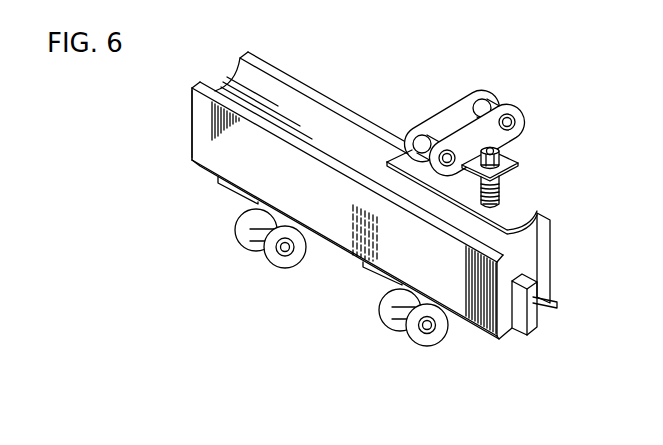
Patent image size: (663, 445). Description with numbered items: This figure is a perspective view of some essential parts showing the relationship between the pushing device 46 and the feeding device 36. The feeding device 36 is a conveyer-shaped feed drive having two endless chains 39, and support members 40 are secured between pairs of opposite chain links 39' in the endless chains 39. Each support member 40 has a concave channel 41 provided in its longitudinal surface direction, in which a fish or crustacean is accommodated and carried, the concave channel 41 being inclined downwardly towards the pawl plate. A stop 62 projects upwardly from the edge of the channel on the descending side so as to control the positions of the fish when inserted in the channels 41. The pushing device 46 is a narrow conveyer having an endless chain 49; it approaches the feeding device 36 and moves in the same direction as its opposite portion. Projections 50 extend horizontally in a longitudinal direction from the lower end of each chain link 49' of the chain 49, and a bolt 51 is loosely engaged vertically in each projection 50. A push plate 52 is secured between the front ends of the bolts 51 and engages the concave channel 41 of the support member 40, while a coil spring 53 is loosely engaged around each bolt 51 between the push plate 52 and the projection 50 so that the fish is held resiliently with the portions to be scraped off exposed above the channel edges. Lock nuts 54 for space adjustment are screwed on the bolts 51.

The feeding device 36 is at (186, 112).
The support member 40 is at (238, 157).
The concave channel 41 is at (322, 133).
The endless chain 39 is at (277, 258).
The chain link 39' is at (360, 314).
The pushing device 46 is at (469, 86).
The endless chain 49 is at (469, 105).
The chain link 49' is at (435, 98).
The projection 50 is at (508, 158).
The lock nut 54 is at (495, 147).
The coil spring 53 is at (500, 188).
The push plate 52 is at (498, 195).
The bolt 51 is at (508, 200).
The stop 62 is at (530, 290).